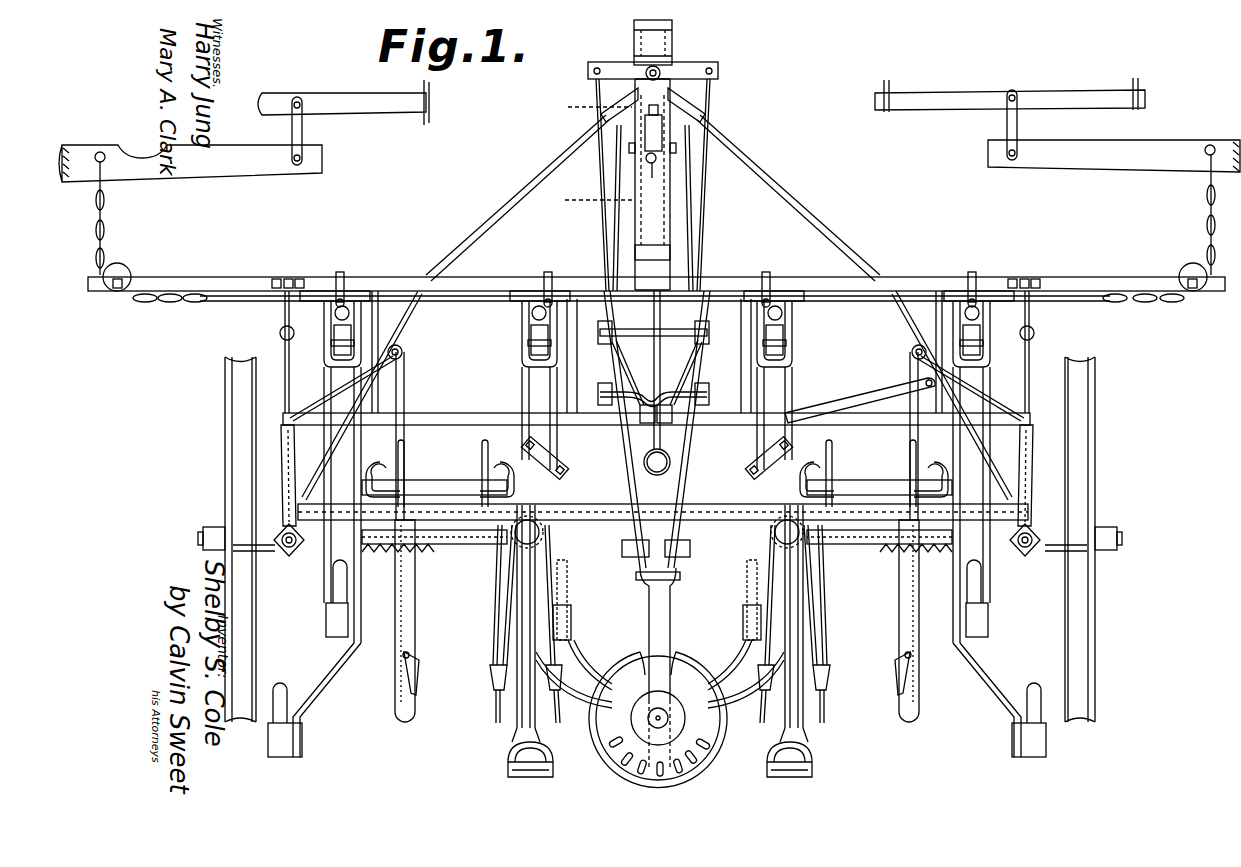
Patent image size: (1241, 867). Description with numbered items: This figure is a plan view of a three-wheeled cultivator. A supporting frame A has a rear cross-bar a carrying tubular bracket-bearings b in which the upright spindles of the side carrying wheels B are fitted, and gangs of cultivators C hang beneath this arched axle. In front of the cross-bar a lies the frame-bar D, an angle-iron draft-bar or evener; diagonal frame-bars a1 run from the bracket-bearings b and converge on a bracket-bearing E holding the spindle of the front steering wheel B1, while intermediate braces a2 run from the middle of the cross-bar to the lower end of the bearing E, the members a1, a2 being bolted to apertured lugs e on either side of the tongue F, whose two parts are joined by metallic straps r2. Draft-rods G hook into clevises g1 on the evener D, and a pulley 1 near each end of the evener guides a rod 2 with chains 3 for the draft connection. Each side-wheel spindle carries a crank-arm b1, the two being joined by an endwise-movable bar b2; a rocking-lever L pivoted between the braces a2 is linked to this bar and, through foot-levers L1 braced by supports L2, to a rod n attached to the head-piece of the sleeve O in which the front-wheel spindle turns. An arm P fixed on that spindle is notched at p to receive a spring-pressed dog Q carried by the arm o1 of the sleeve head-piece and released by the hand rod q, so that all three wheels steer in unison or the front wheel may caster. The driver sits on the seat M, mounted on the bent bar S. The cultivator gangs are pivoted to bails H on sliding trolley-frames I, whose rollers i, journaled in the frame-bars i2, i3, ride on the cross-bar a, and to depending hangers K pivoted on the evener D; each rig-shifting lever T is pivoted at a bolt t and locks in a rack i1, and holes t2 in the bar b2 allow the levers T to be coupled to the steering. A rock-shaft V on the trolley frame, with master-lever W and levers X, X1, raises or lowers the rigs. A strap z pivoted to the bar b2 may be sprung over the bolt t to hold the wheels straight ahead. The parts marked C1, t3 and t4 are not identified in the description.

The sheave or pulley 1 is at (117, 292).
The rod 2 is at (470, 300).
The chains 3 is at (100, 230).
The supporting frame A is at (706, 520).
The rear cross-bar a is at (724, 520).
The diagonally arranged frame-bars a1 is at (770, 163).
The intermediate braces a2 is at (698, 218).
The carrying wheels B is at (225, 468).
The front steering wheel B1 is at (599, 205).
The tubular bracket-bearing b is at (285, 555).
The crank-arm b1 is at (1040, 460).
The transverse rod or bar b2 is at (475, 413).
The gangs of cultivators C is at (326, 586).
The standard bracket C1 is at (760, 285).
The frame-bar D is at (380, 285).
The bracket-bearing E is at (619, 103).
The apertured lugs or ears e is at (648, 55).
The tongue or pole F is at (633, 35).
The draft-rod G is at (285, 365).
The loop or clevis g1 is at (1037, 320).
The bail H is at (370, 400).
The sliding trolley-frame I is at (440, 500).
The rollers i is at (360, 488).
The ratchet or rack i1 is at (663, 552).
The trolley frame-bar i2 is at (641, 413).
The trolley frame-bar i3 is at (647, 559).
The depending hangers K is at (338, 278).
The rocking-lever L is at (655, 380).
The foot-levers or treadles L1 is at (603, 540).
The intermediate braces L2 is at (625, 429).
The seat M is at (705, 772).
The rod n is at (710, 110).
The sleeve O is at (662, 66).
The rearwardly extending arm o1 is at (612, 125).
The rearwardly projecting arm P is at (670, 100).
The notch p is at (600, 110).
The sliding spring-pressed dog Q is at (648, 160).
The hand-operated connecting rod q is at (645, 222).
The metallic straps r2 is at (702, 140).
The seat bar S is at (670, 610).
The rig-shifting lever T is at (406, 400).
The pivot-bolt t is at (402, 350).
The holes t2 is at (410, 440).
The cross bar t3 is at (657, 403).
The cross bar t4 is at (653, 325).
The rock-shaft V is at (650, 465).
The master-lever W is at (519, 728).
The lever X is at (500, 645).
The lever X1 is at (762, 705).
The strap z is at (850, 400).